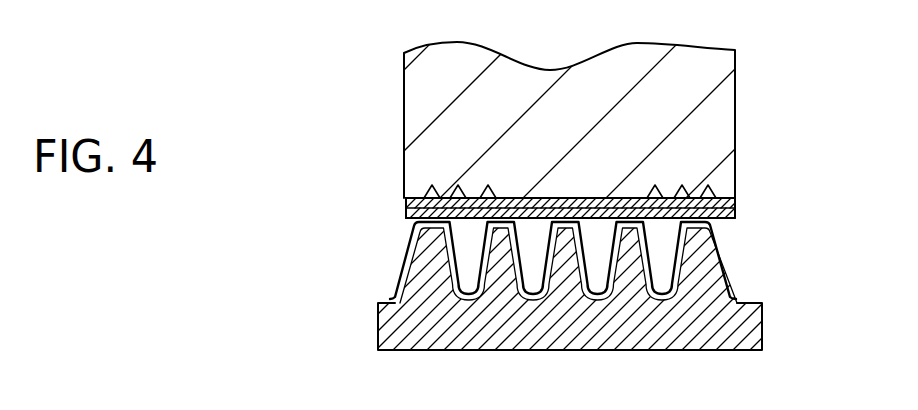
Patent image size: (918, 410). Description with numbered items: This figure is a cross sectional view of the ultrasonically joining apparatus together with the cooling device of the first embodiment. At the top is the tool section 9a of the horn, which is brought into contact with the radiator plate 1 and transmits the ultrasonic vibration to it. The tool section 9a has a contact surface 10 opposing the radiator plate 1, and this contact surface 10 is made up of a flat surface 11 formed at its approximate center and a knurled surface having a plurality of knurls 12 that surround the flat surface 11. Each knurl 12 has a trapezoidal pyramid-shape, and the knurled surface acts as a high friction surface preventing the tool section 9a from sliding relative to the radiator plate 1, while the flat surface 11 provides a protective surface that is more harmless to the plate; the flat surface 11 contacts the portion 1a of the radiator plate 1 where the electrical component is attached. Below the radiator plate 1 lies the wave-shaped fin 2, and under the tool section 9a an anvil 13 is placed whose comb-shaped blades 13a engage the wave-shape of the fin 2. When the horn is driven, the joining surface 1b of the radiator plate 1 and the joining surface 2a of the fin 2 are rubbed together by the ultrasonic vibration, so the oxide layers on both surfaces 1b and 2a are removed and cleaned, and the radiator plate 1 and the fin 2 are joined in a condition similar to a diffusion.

The tool section 9a is at (698, 73).
The radiator plate 1 is at (722, 212).
The portion where the electrical component is attached 1a is at (405, 204).
The joining surface of the radiator plate 1b is at (708, 234).
The flat surface 11 is at (622, 198).
The knurls 12 is at (405, 190).
The contact surface 10 is at (388, 200).
The fin 2 is at (573, 299).
The joining surface of the fin 2a is at (423, 237).
The anvil 13 is at (710, 350).
The comb-shaped blades 13a is at (708, 263).